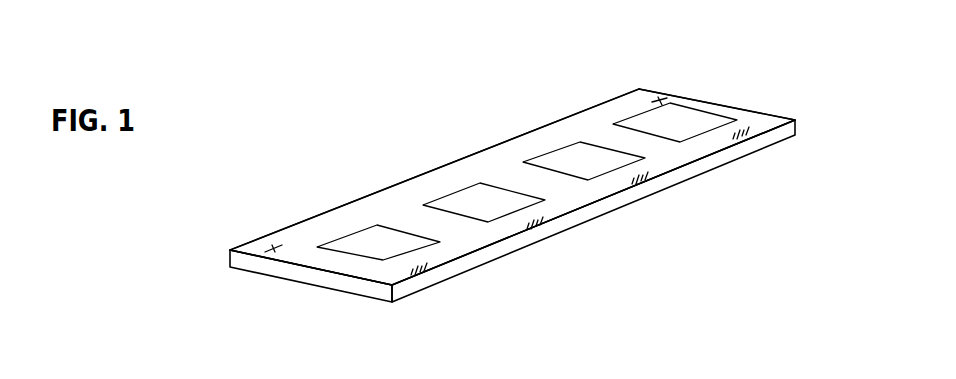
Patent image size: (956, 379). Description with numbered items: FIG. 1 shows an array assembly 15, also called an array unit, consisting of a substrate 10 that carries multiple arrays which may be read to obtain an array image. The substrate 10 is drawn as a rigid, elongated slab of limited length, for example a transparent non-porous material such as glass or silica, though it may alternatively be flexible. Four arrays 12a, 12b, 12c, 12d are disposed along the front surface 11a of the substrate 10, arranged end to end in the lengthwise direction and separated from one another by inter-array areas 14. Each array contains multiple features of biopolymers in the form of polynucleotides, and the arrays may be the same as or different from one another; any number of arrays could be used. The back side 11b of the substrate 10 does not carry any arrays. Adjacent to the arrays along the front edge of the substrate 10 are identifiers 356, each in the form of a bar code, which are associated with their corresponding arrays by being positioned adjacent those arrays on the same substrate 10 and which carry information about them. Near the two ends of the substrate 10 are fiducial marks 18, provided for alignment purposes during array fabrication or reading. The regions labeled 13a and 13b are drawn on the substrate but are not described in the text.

The substrate 10 is at (407, 297).
The front surface 11a is at (297, 230).
The back side 11b is at (578, 228).
The array 12a is at (367, 235).
The array 12b is at (473, 200).
The array 12c is at (600, 152).
The array 12d is at (643, 121).
The first end region 13a is at (708, 151).
The top surface region 13b is at (572, 127).
The inter-array area 14 is at (447, 227).
The array assembly 15 is at (286, 298).
The fiducial mark 18 is at (278, 249).
The identifier 356 is at (420, 276).